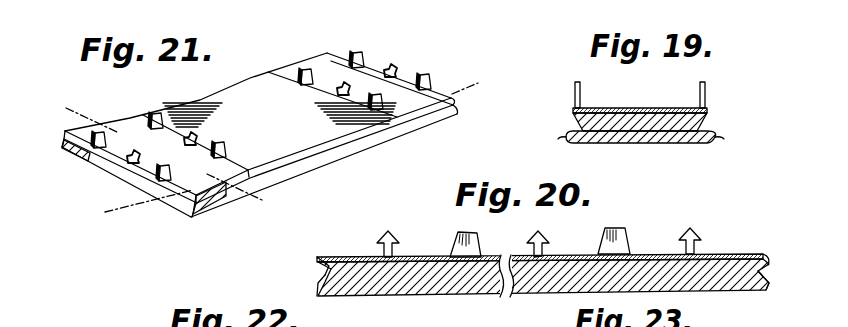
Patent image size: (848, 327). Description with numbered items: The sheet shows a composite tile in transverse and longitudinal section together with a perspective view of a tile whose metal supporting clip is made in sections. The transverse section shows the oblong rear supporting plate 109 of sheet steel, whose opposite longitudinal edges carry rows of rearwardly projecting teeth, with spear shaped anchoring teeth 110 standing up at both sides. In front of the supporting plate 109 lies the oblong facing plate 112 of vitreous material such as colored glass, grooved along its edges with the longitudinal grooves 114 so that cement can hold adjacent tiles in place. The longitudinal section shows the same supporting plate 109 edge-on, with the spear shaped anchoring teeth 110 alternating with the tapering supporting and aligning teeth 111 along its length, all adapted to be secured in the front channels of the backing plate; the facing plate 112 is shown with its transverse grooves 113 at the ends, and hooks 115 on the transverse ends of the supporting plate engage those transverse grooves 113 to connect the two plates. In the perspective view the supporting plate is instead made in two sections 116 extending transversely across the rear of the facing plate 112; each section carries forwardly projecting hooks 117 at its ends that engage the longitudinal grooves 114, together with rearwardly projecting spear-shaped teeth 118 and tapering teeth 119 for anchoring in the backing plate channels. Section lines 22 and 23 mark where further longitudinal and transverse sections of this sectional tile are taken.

In FIG. 19, the rear supporting plate 109 is at (643, 108).
In FIG. 20, the rear supporting plate 109 is at (501, 257).
In FIG. 19, the spear shaped anchoring teeth 110 is at (575, 90).
In FIG. 20, the spear shaped anchoring teeth 110 is at (378, 249).
In FIG. 20, the tapering supporting and aligning teeth 111 is at (450, 240).
In FIG. 21, the facing plate 112 is at (299, 177).
In FIG. 19, the facing plate 112 is at (637, 144).
In FIG. 20, the facing plate 112 is at (510, 297).
In FIG. 21, the transverse grooves 113 is at (105, 165).
In FIG. 20, the transverse grooves 113 is at (318, 286).
In FIG. 21, the longitudinal grooves 114 is at (362, 143).
In FIG. 19, the longitudinal grooves 114 is at (570, 134).
In FIG. 20, the hooks 115 is at (318, 260).
In FIG. 21, the supporting plate sections 116 is at (196, 152).
In FIG. 21, the forwardly projecting hooks 117 is at (223, 205).
In FIG. 21, the spear-shaped teeth 118 is at (183, 138).
In FIG. 21, the tapering teeth 119 is at (105, 139).
In FIG. 21, the section line 22- 22 is at (133, 206).
In FIG. 21, the section line 23- 23 is at (64, 107).